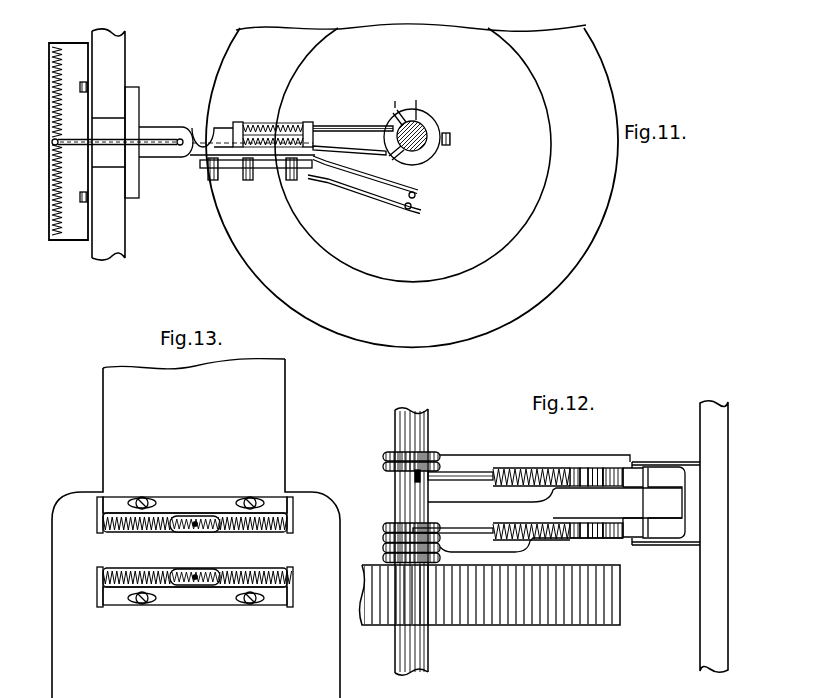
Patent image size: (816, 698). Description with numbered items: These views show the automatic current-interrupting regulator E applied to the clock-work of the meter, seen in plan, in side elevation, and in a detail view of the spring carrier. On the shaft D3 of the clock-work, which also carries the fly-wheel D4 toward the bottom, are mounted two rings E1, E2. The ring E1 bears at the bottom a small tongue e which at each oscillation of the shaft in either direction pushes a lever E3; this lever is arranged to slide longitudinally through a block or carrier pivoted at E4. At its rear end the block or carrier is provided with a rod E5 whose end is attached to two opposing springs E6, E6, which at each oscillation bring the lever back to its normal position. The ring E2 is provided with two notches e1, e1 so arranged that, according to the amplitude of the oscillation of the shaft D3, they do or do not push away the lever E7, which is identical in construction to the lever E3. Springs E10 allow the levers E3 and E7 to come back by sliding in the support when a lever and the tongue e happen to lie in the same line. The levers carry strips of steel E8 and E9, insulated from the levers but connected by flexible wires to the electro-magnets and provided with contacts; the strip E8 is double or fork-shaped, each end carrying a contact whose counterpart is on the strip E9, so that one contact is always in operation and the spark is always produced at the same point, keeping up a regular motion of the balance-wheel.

In FIG. 11, the shaft D3 is at (428, 150).
In FIG. 12, the shaft D3 is at (418, 434).
In FIG. 11, the fly-wheel D4 is at (412, 186).
In FIG. 12, the fly-wheel D4 is at (490, 595).
In FIG. 11, the automatic current-interrupting regulator E is at (244, 135).
In FIG. 13, the automatic current-interrupting regulator E is at (195, 575).
In FIG. 12, the automatic current-interrupting regulator E is at (578, 537).
In FIG. 12, the ring E1 is at (384, 454).
In FIG. 11, the ring E2 is at (433, 123).
In FIG. 12, the ring E2 is at (387, 535).
In FIG. 11, the lever E3 is at (326, 132).
In FIG. 12, the lever E3 is at (466, 480).
In FIG. 11, the pivot of block or carrier E4 is at (160, 157).
In FIG. 11, the rod E5 is at (117, 133).
In FIG. 13, the rod E5 is at (196, 522).
In FIG. 11, the opposing springs E6 is at (52, 97).
In FIG. 13, the opposing springs E6 is at (130, 532).
In FIG. 11, the lever E7 is at (349, 155).
In FIG. 12, the lever E7 is at (469, 533).
In FIG. 11, the strip of steel E8 is at (401, 190).
In FIG. 12, the strip of steel E8 is at (530, 462).
In FIG. 11, the strip of steel E9 is at (417, 212).
In FIG. 12, the strip of steel E9 is at (531, 551).
In FIG. 11, the springs E10 is at (268, 123).
In FIG. 12, the springs E10 is at (558, 512).
In FIG. 11, the tongue e is at (398, 103).
In FIG. 12, the tongue e is at (413, 479).
In FIG. 11, the notches e1 is at (405, 130).